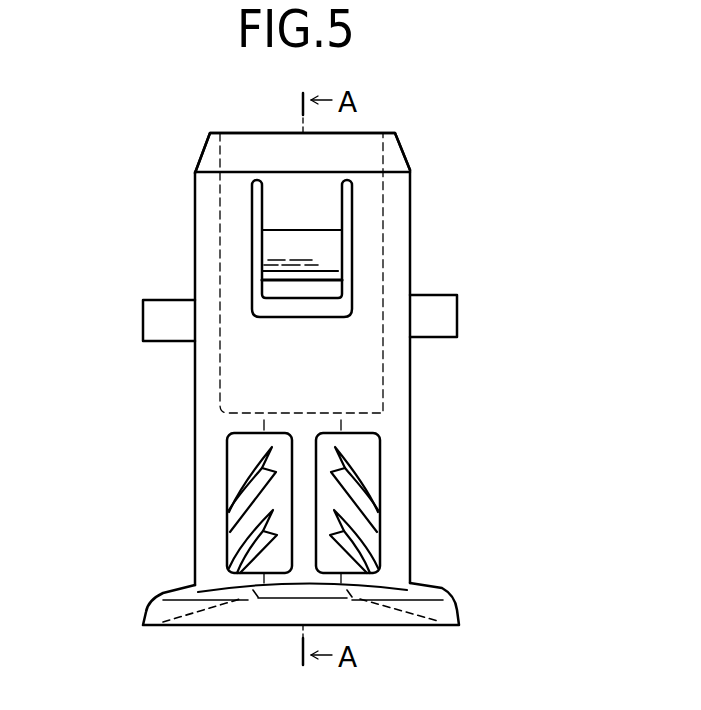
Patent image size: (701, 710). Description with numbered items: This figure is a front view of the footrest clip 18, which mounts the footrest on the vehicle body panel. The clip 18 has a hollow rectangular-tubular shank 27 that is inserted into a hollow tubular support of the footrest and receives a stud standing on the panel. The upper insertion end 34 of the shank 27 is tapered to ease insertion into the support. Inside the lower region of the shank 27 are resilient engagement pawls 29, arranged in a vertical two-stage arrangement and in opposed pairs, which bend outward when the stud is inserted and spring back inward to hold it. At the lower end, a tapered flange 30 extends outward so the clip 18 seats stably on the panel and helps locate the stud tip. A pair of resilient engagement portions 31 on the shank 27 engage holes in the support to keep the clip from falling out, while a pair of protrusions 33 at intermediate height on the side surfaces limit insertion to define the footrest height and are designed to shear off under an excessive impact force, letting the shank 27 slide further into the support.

The clip 18 is at (303, 357).
The shank 27 is at (410, 400).
The resilient engagement pawl 29 is at (257, 475).
The flange 30 is at (155, 612).
The resilient engagement portion 31 is at (280, 253).
The protrusion 33 is at (157, 320).
The insertion end 34 is at (202, 152).